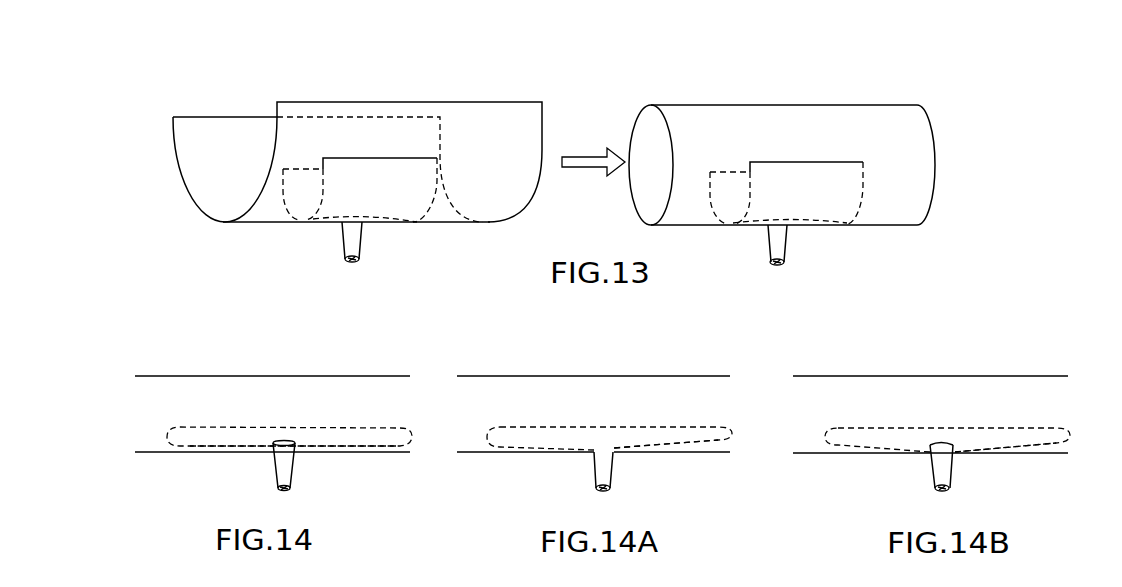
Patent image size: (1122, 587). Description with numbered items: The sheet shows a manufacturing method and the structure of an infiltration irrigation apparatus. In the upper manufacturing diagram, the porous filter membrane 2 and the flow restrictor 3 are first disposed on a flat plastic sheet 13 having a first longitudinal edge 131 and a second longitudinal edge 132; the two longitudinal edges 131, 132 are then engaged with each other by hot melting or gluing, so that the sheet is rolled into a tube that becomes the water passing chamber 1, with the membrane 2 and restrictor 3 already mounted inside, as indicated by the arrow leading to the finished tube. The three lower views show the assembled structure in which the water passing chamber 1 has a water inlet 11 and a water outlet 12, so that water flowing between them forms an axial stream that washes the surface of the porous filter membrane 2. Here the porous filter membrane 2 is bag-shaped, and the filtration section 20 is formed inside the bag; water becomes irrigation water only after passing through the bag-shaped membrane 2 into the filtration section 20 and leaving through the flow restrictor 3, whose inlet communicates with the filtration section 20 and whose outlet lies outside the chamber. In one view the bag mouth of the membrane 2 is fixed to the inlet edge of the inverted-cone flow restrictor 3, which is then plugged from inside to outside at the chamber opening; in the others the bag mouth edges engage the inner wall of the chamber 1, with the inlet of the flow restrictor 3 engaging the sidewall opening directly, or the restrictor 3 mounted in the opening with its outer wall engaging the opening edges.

In FIG. 13, the water passing chamber 1 is at (653, 123).
In FIG. 14, the water passing chamber 1 is at (222, 385).
In FIG. 14A, the water passing chamber 1 is at (585, 383).
In FIG. 14B, the water passing chamber 1 is at (892, 390).
In FIG. 14, the water inlet 11 is at (144, 403).
In FIG. 14, the water outlet 12 is at (402, 395).
In FIG. 13, the porous filter membrane 2 is at (415, 193).
In FIG. 14, the porous filter membrane 2 is at (277, 427).
In FIG. 14A, the porous filter membrane 2 is at (657, 425).
In FIG. 14B, the porous filter membrane 2 is at (1002, 427).
In FIG. 13, the filtration section 20 is at (382, 220).
In FIG. 14, the filtration section 20 is at (353, 437).
In FIG. 14A, the filtration section 20 is at (673, 438).
In FIG. 14B, the filtration section 20 is at (1023, 438).
In FIG. 13, the flow restrictor 3 is at (347, 235).
In FIG. 14, the flow restrictor 3 is at (280, 463).
In FIG. 14A, the flow restrictor 3 is at (598, 472).
In FIG. 14B, the flow restrictor 3 is at (938, 464).
In FIG. 13, the plastic sheet 13 is at (233, 133).
In FIG. 13, the first longitudinal edge 131 is at (197, 116).
In FIG. 13, the second longitudinal edge 132 is at (388, 102).